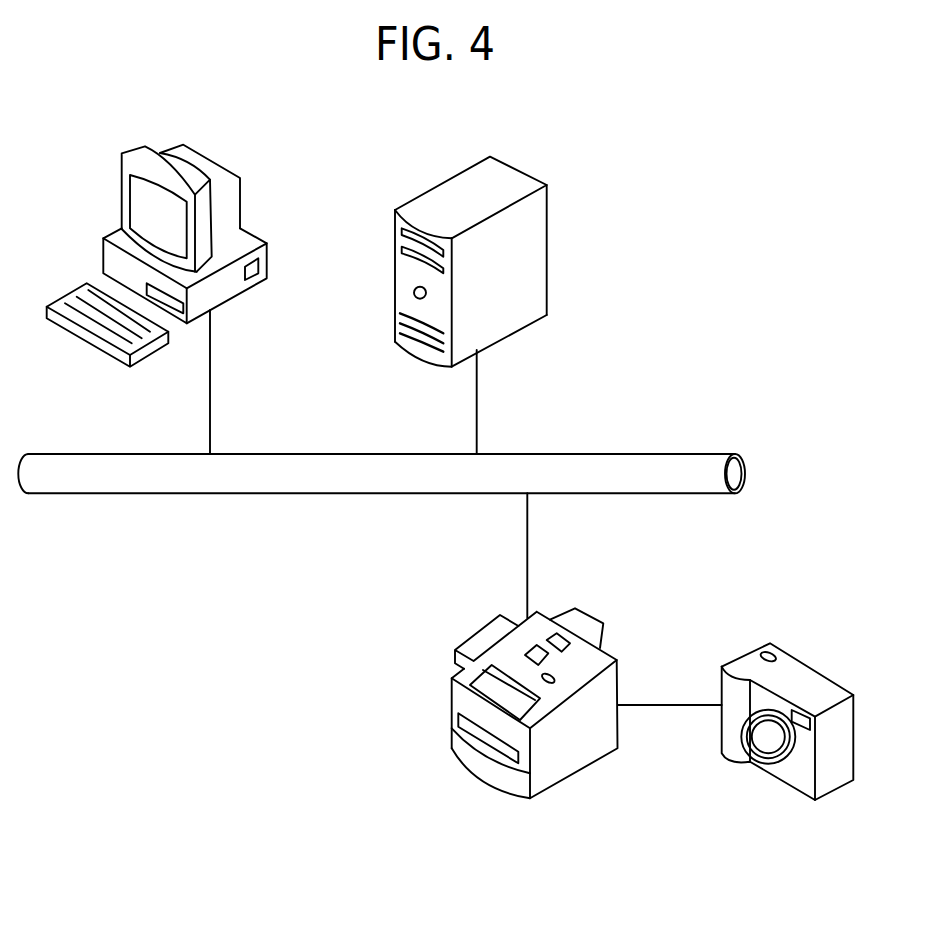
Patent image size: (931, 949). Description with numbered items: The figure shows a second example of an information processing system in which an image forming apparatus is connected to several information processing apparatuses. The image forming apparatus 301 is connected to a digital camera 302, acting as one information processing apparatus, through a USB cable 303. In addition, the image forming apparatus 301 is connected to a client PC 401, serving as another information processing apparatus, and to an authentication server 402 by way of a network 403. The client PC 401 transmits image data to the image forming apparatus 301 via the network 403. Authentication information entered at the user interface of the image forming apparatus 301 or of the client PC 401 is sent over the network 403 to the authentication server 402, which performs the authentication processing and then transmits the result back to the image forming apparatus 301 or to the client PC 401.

The client PC 401 is at (210, 158).
The authentication server 402 is at (510, 163).
The network 403 is at (638, 452).
The image forming apparatus 301 is at (593, 617).
The digital camera 302 is at (800, 661).
The USB cable 303 is at (673, 703).